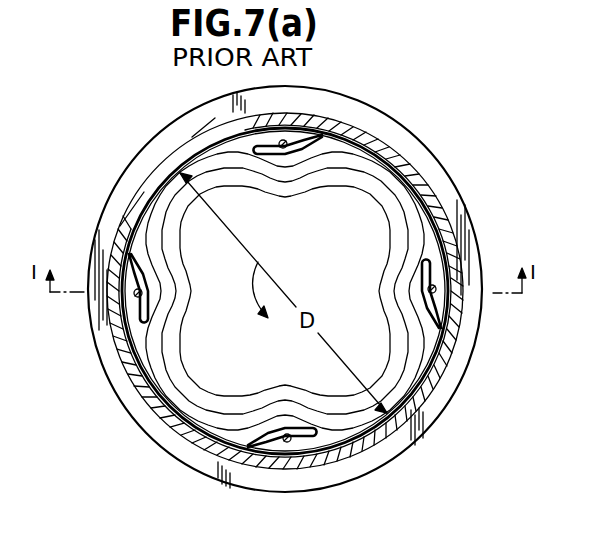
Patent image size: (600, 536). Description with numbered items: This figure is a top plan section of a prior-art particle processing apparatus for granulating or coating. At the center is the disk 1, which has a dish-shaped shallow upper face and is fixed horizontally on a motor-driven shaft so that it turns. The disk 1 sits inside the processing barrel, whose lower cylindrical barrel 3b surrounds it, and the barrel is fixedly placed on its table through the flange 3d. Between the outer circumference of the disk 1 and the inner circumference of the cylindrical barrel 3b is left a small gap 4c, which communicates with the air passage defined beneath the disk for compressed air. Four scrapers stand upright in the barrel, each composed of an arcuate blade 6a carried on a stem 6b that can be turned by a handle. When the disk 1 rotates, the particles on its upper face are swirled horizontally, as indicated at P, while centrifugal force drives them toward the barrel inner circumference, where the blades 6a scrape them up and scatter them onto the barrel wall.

The horizontal swirling motion of particles P is at (387, 180).
The disk 1 is at (413, 205).
The stem 6b is at (428, 285).
The arcuate blade 6a is at (440, 313).
The lower cylindrical barrel 3b is at (452, 358).
The small gap 4c is at (410, 395).
The flange 3d is at (123, 390).